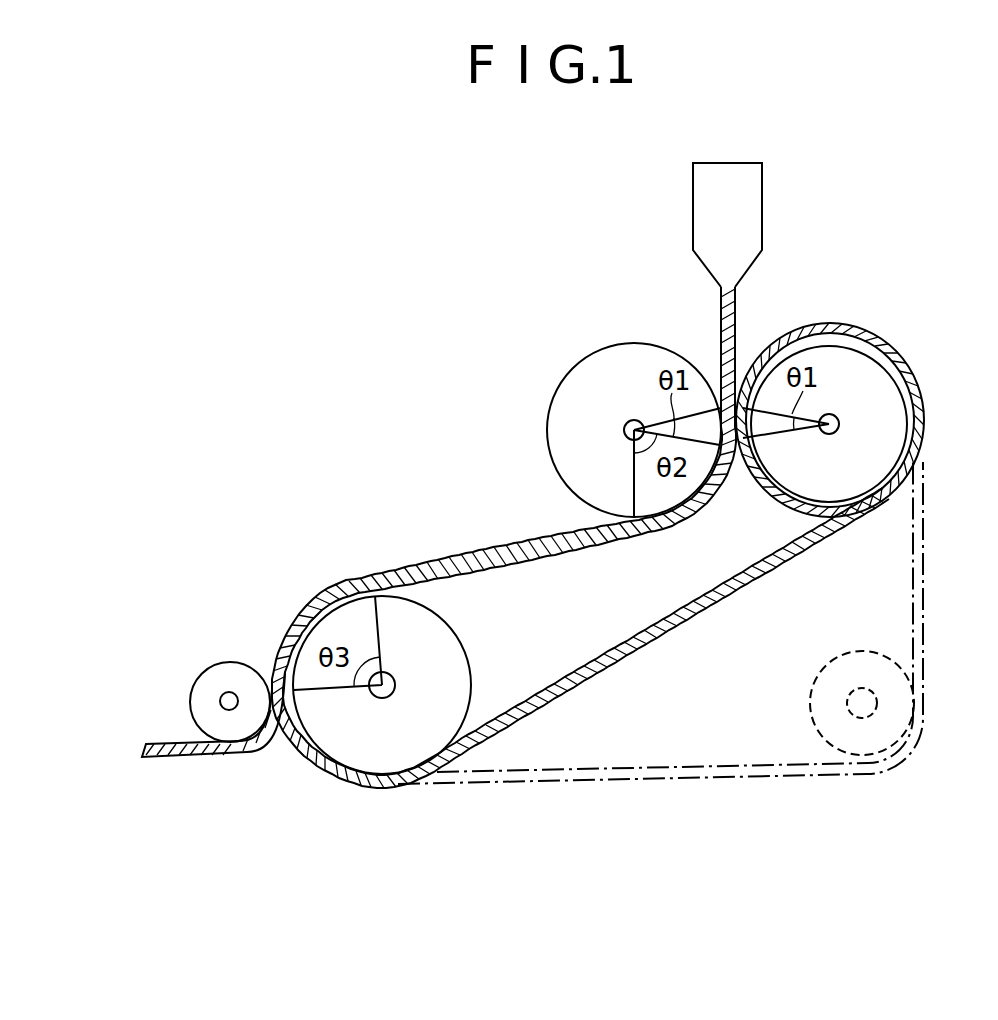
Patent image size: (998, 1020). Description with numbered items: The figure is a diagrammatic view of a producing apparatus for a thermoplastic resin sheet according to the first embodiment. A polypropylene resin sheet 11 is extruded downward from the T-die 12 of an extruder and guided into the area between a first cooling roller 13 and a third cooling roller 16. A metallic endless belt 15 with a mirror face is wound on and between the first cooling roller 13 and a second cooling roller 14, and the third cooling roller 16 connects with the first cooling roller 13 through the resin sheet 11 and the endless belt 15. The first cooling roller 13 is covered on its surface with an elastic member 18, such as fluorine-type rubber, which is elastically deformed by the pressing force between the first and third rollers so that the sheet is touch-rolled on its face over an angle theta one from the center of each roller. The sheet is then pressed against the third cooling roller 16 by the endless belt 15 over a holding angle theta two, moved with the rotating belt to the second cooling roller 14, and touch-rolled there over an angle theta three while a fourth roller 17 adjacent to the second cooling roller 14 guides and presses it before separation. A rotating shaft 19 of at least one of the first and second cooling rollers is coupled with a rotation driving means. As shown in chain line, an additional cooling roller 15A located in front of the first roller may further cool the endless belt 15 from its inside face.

The polypropylene resin sheet 11 is at (490, 543).
The T-die 12 is at (752, 221).
The first cooling roller 13 is at (880, 393).
The second cooling roller 14 is at (393, 745).
The metallic endless belt 15 is at (652, 642).
The additional cooling roller 15A is at (810, 693).
The third cooling roller 16 is at (602, 377).
The fourth roller 17 is at (222, 680).
The elastic member 18 is at (860, 330).
The rotating shaft 19 is at (397, 684).